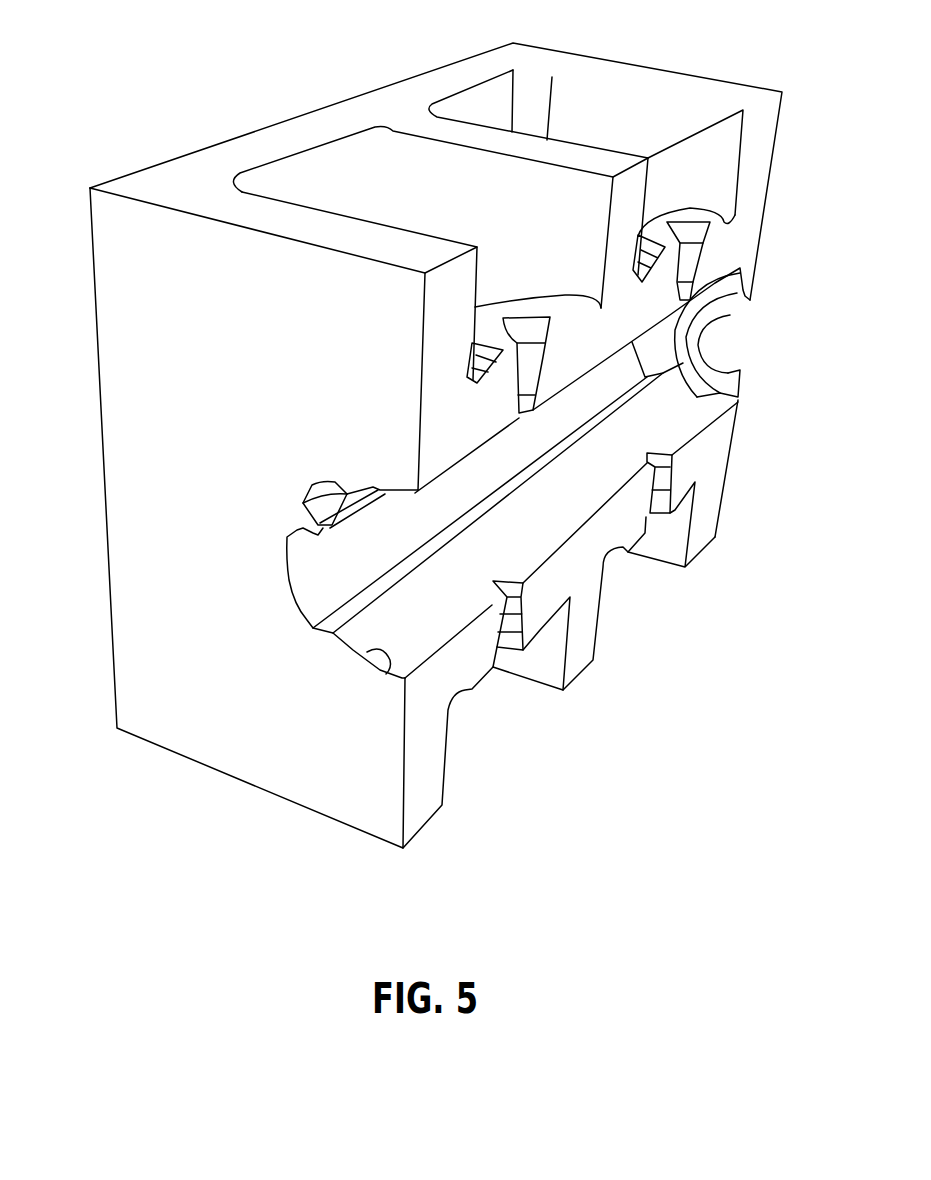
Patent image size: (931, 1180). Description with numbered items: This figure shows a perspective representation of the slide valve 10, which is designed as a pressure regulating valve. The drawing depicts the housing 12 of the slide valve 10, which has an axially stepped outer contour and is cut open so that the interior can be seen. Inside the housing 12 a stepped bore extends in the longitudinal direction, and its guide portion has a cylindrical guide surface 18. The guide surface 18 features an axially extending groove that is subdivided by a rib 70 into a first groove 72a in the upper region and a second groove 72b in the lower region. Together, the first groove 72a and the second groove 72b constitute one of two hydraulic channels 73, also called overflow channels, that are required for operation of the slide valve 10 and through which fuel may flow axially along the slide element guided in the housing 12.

The slide valve 10 is at (144, 125).
The housing 12 is at (305, 772).
The guide surface 18 is at (367, 660).
The rib 70 is at (307, 520).
The first groove 72a is at (313, 485).
The second groove 72b is at (297, 607).
The hydraulic channel 73 is at (320, 566).